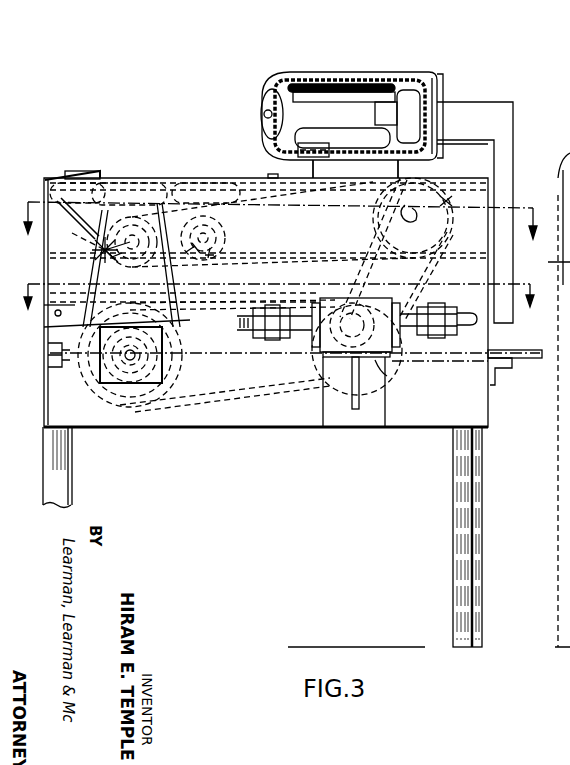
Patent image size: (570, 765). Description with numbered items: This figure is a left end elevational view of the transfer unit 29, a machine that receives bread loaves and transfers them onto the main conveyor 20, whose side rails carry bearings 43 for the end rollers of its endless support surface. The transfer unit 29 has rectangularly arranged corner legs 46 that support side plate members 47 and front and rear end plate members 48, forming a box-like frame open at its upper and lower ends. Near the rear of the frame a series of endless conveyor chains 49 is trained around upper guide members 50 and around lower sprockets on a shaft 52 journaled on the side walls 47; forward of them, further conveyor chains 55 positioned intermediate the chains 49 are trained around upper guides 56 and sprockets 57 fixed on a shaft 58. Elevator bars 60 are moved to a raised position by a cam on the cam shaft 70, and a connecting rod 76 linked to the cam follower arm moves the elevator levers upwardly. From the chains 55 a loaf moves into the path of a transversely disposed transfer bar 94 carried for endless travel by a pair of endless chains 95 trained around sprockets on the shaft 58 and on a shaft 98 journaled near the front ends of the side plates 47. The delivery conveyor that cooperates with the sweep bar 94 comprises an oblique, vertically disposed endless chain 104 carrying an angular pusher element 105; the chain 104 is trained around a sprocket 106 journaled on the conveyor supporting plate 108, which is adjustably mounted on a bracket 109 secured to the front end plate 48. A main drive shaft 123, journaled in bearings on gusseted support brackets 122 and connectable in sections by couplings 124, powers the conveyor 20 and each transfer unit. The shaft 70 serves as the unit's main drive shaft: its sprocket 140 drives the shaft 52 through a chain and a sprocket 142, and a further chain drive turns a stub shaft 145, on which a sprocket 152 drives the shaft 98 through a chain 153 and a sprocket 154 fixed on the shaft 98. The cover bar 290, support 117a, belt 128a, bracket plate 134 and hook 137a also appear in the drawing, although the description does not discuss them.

The conveyor 20 is at (548, 427).
The transfer unit 29 is at (428, 435).
The cover bar 290 is at (396, 73).
The bearings 43 is at (558, 217).
The corner legs 46 is at (57, 477).
The side plate members 47 is at (305, 418).
The end plate members 48 is at (55, 392).
The endless conveyor chains 49 is at (135, 180).
The upper guide members 50 is at (63, 176).
The shaft 52 is at (103, 250).
The endless conveyor chains 55 is at (227, 230).
The upper guides 56 is at (215, 190).
The sprockets 57 is at (185, 259).
The shaft 58 is at (218, 262).
The elevator bars 60 is at (98, 170).
The cam shaft 70 is at (102, 390).
The connecting rod 76 is at (80, 224).
The transfer bar 94 is at (272, 174).
The endless chains 95 is at (302, 252).
The shaft 98 is at (413, 218).
The endless chain 104 is at (340, 78).
The angular pusher element 105 is at (320, 143).
The sprocket 106 is at (284, 90).
The conveyor supporting plate 108 is at (445, 72).
The bracket 109 is at (498, 127).
The support 117a is at (398, 169).
The gusseted support brackets 122 is at (372, 418).
The main drive shaft 123 is at (436, 392).
The couplings 124 is at (438, 305).
The belt 128a is at (225, 398).
The bracket plate 134 is at (533, 350).
The hook 137a is at (497, 375).
The sprocket 140 is at (185, 380).
The sprocket 142 is at (112, 258).
The stub shaft 145 is at (342, 389).
The sprocket 152 is at (387, 378).
The chain 153 is at (440, 252).
The sprocket 154 is at (448, 200).